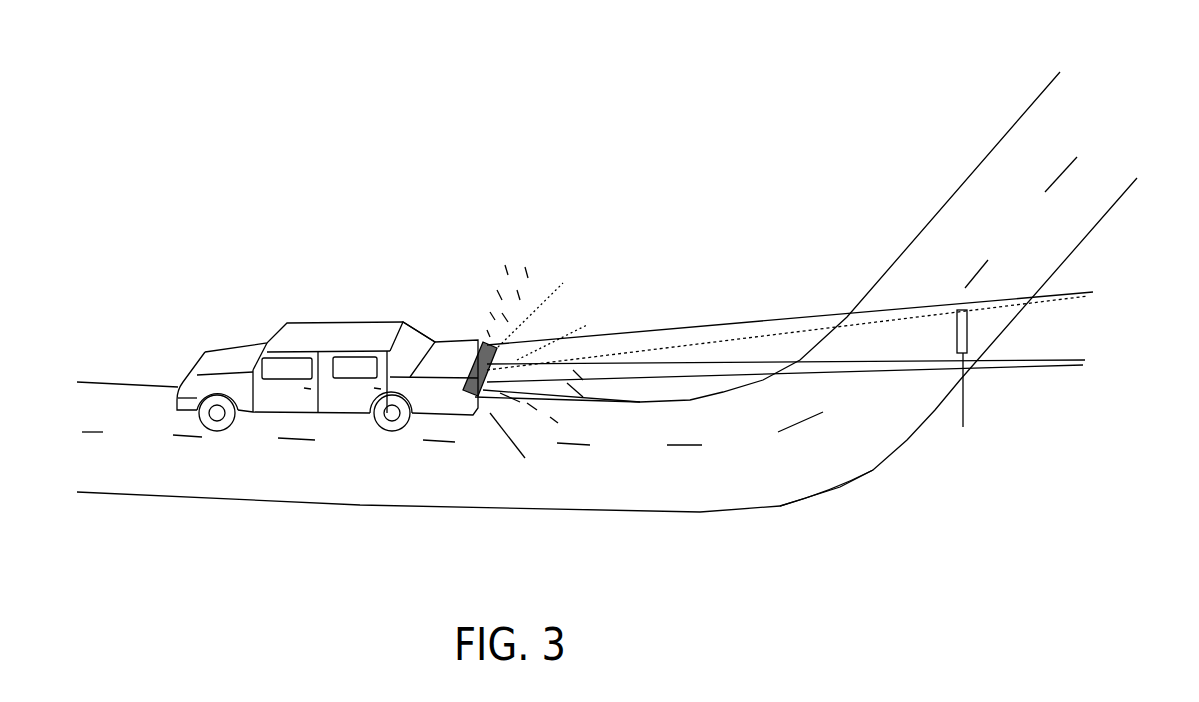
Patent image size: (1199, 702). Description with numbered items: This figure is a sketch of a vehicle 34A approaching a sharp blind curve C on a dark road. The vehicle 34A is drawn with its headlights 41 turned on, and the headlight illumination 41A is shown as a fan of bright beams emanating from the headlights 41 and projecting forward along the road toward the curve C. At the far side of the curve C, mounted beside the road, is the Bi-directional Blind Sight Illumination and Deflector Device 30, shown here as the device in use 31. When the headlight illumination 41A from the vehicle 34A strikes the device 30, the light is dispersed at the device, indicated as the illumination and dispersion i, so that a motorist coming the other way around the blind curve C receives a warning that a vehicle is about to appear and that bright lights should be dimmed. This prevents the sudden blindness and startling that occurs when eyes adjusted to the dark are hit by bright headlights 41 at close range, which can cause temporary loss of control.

The vehicle A 34A is at (350, 337).
The headlights 41 is at (483, 368).
The headlight illumination 41A is at (620, 333).
The Bi-directional Blind Sight Illumination and Deflector Device 30 is at (958, 342).
The device in use 31 is at (1006, 455).
The curve C is at (847, 488).
The illumination, dispersion at device i is at (985, 333).